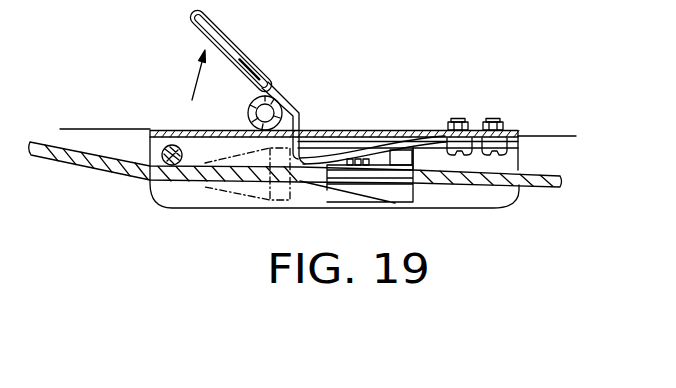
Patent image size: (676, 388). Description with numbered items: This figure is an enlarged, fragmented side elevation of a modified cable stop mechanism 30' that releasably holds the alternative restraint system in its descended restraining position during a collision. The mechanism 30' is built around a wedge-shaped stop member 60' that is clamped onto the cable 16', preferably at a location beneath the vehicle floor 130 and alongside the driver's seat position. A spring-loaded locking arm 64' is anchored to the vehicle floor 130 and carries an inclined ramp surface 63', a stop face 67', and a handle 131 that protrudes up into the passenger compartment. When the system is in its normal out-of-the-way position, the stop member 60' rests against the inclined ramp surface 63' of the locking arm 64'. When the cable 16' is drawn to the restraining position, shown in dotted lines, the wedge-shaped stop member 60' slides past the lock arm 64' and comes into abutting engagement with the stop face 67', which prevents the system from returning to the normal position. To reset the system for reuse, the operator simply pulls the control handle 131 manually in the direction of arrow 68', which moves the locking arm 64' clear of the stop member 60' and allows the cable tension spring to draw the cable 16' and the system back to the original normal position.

The modified cable stop mechanism 30' is at (334, 130).
The vehicle floor 130 is at (546, 130).
The handle 131 is at (244, 48).
The cable 16' is at (298, 182).
The wedge-shaped stop member 60' is at (376, 193).
The inclined ramp surface 63' is at (373, 128).
The spring-loaded locking arm 64' is at (296, 120).
The stop face 67' is at (244, 113).
The arrow 68' is at (169, 75).